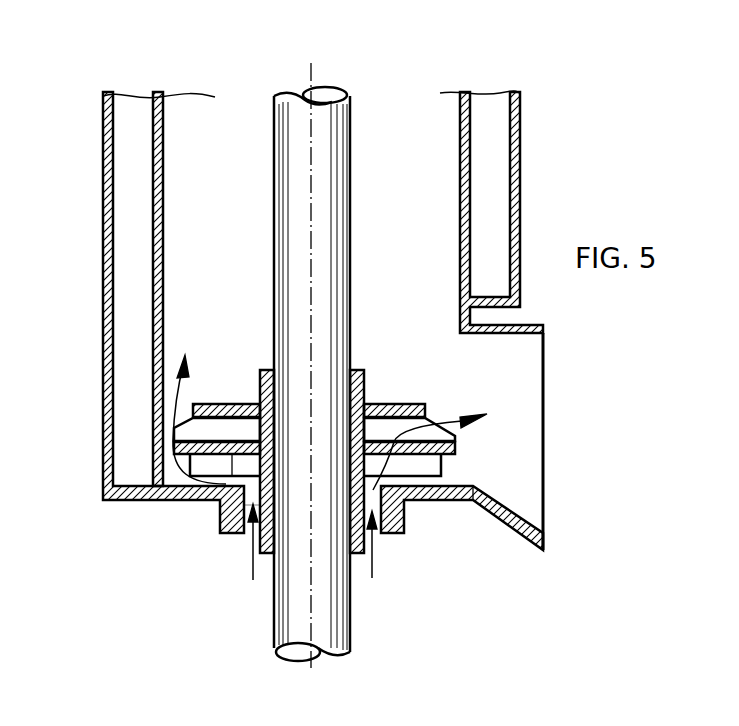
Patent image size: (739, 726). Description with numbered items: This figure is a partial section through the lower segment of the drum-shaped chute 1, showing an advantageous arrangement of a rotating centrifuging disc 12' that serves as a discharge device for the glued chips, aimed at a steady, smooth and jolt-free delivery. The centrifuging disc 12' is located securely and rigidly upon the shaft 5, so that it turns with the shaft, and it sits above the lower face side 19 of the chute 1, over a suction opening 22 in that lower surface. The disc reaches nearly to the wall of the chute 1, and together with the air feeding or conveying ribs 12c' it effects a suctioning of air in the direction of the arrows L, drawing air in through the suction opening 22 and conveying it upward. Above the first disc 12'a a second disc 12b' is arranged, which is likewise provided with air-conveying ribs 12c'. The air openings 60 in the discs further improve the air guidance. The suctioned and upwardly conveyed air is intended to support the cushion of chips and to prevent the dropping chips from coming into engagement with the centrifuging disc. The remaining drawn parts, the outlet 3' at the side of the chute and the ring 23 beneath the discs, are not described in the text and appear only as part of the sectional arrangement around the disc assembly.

The chute 1 is at (103, 153).
The shaft 5 is at (350, 97).
The outlet pipe 3' is at (540, 320).
The centrifuging disc 12' is at (338, 431).
The second disc 12b' is at (309, 377).
The first disc 12'a is at (418, 476).
The air feeding or conveying ribs 12c' is at (417, 503).
The lower face side 19 is at (150, 502).
The passage 22 is at (245, 504).
The ring 23 is at (420, 467).
The air openings 60 is at (402, 404).
The arrows L is at (330, 482).